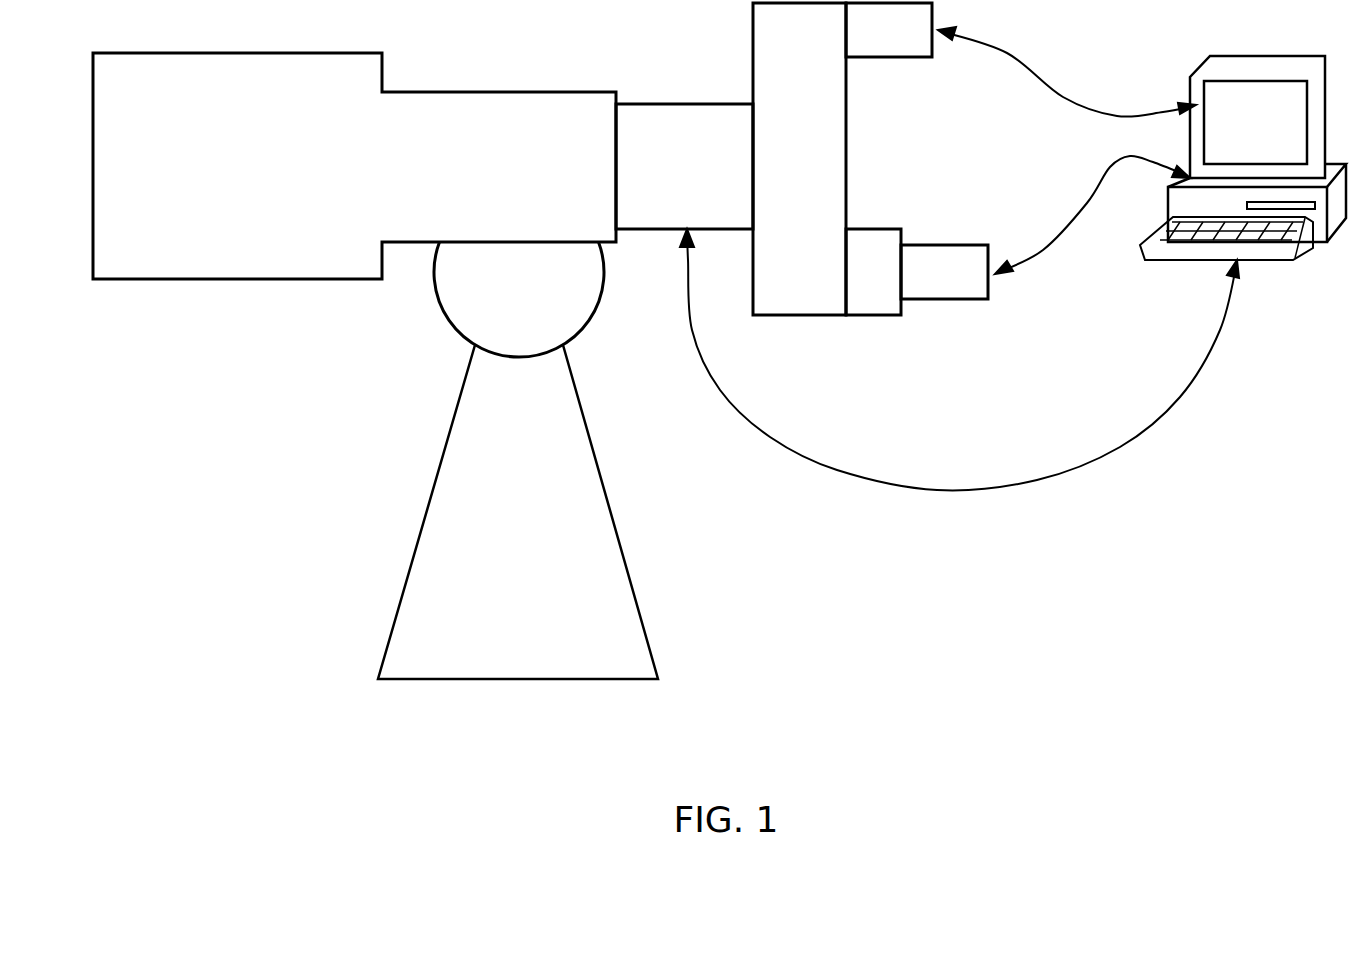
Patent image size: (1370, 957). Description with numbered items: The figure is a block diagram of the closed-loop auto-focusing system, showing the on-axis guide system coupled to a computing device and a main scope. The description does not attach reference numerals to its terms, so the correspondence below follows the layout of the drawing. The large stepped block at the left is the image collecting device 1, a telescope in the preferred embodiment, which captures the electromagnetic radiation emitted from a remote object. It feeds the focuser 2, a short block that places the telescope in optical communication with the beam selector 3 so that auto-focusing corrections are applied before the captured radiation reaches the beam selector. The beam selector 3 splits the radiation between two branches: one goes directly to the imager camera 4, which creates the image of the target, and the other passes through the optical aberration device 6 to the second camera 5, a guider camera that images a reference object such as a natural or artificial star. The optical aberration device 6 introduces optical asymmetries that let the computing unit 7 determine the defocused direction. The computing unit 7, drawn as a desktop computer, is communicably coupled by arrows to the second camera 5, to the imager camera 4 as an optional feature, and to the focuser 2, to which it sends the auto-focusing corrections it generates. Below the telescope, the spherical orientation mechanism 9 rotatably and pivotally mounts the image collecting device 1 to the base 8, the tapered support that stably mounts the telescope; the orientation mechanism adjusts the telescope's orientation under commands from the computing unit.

The electron gun / source housing 1 is at (350, 177).
The connecting section 2 is at (676, 177).
The main unit 3 is at (791, 177).
The control unit 4 is at (881, 42).
The detector unit 5 is at (934, 284).
The interface unit 6 is at (864, 284).
The computer 7 is at (1244, 134).
The beam cone / specimen region 8 is at (507, 529).
The spherical chamber 9 is at (508, 294).